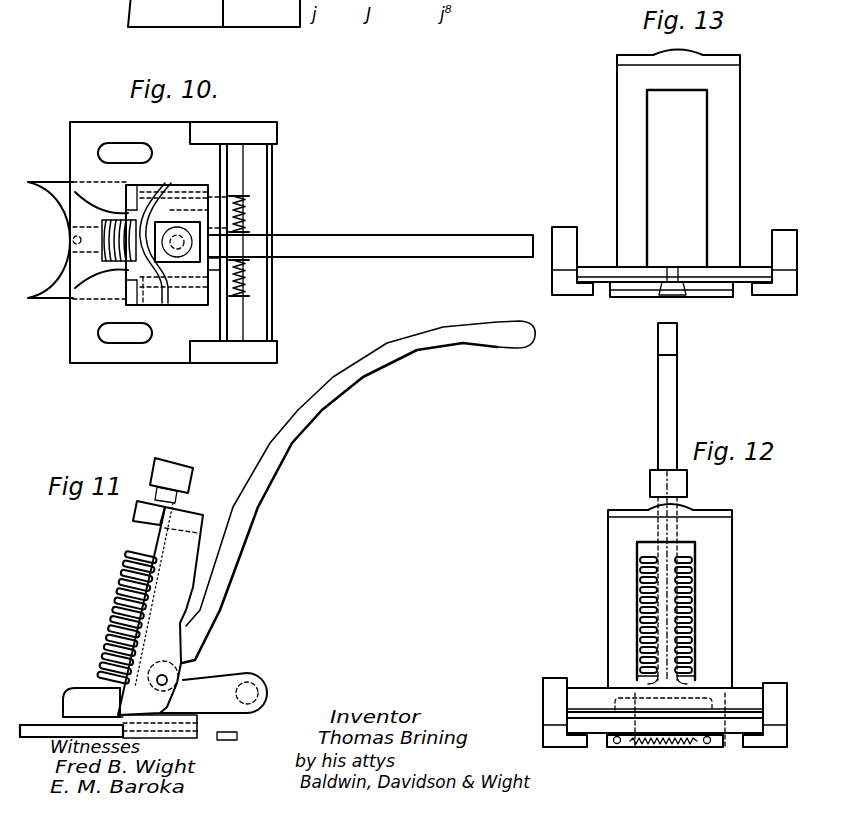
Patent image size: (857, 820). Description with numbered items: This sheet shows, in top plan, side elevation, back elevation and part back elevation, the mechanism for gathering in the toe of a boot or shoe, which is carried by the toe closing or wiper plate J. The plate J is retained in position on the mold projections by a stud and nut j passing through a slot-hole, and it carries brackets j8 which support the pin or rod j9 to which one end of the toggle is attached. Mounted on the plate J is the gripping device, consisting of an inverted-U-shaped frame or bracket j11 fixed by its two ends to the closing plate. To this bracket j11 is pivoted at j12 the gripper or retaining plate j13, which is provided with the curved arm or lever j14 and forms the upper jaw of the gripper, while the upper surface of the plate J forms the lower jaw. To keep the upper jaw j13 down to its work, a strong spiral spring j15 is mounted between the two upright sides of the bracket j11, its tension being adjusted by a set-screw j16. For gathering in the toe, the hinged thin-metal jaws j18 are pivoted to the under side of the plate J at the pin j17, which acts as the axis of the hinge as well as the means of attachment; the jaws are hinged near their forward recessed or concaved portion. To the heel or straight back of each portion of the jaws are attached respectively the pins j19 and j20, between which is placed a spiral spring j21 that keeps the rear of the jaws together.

In FIG. 10, the toe closing or wiper plate J is at (170, 343).
In FIG. 11, the toe closing or wiper plate J is at (63, 714).
In FIG. 13, the toe closing or wiper plate J is at (605, 277).
In FIG. 12, the toe closing or wiper plate J is at (580, 727).
In FIG. 10, the stud and nut j is at (153, 158).
In FIG. 10, the bracket j8 is at (277, 132).
In FIG. 11, the bracket j8 is at (263, 690).
In FIG. 13, the bracket j8 is at (565, 230).
In FIG. 12, the bracket j8 is at (552, 697).
In FIG. 10, the pin or rod j9 is at (260, 178).
In FIG. 11, the pin or rod j9 is at (250, 687).
In FIG. 12, the pin or rod j9 is at (592, 688).
In FIG. 10, the inverted-U-shaped frame or bracket j11 is at (200, 174).
In FIG. 11, the inverted-U-shaped frame or bracket j11 is at (213, 500).
In FIG. 13, the inverted-U-shaped frame or bracket j11 is at (707, 180).
In FIG. 12, the inverted-U-shaped frame or bracket j11 is at (720, 587).
In FIG. 11, the pivot j12 is at (167, 680).
In FIG. 10, the gripper or retaining plate j13 is at (97, 263).
In FIG. 11, the gripper or retaining plate j13 is at (80, 687).
In FIG. 10, the curved arm or lever j14 is at (412, 260).
In FIG. 11, the curved arm or lever j14 is at (294, 450).
In FIG. 12, the curved arm or lever j14 is at (678, 382).
In FIG. 11, the spiral spring j15 is at (123, 565).
In FIG. 12, the spiral spring j15 is at (638, 590).
In FIG. 10, the set-screw j16 is at (205, 263).
In FIG. 11, the set-screw j16 is at (182, 462).
In FIG. 12, the set-screw j16 is at (687, 480).
In FIG. 10, the pin j17 is at (75, 241).
In FIG. 13, the pin j17 is at (673, 267).
In FIG. 10, the hinged thin-metal jaws j18 is at (42, 182).
In FIG. 11, the hinged thin-metal jaws j18 is at (30, 665).
In FIG. 13, the hinged thin-metal jaws j18 is at (640, 294).
In FIG. 10, the pin j19 is at (247, 198).
In FIG. 12, the pin j19 is at (710, 743).
In FIG. 10, the pin j20 is at (240, 290).
In FIG. 11, the pin j20 is at (220, 720).
In FIG. 12, the pin j20 is at (614, 743).
In FIG. 10, the spiral spring j21 is at (247, 226).
In FIG. 12, the spiral spring j21 is at (633, 746).